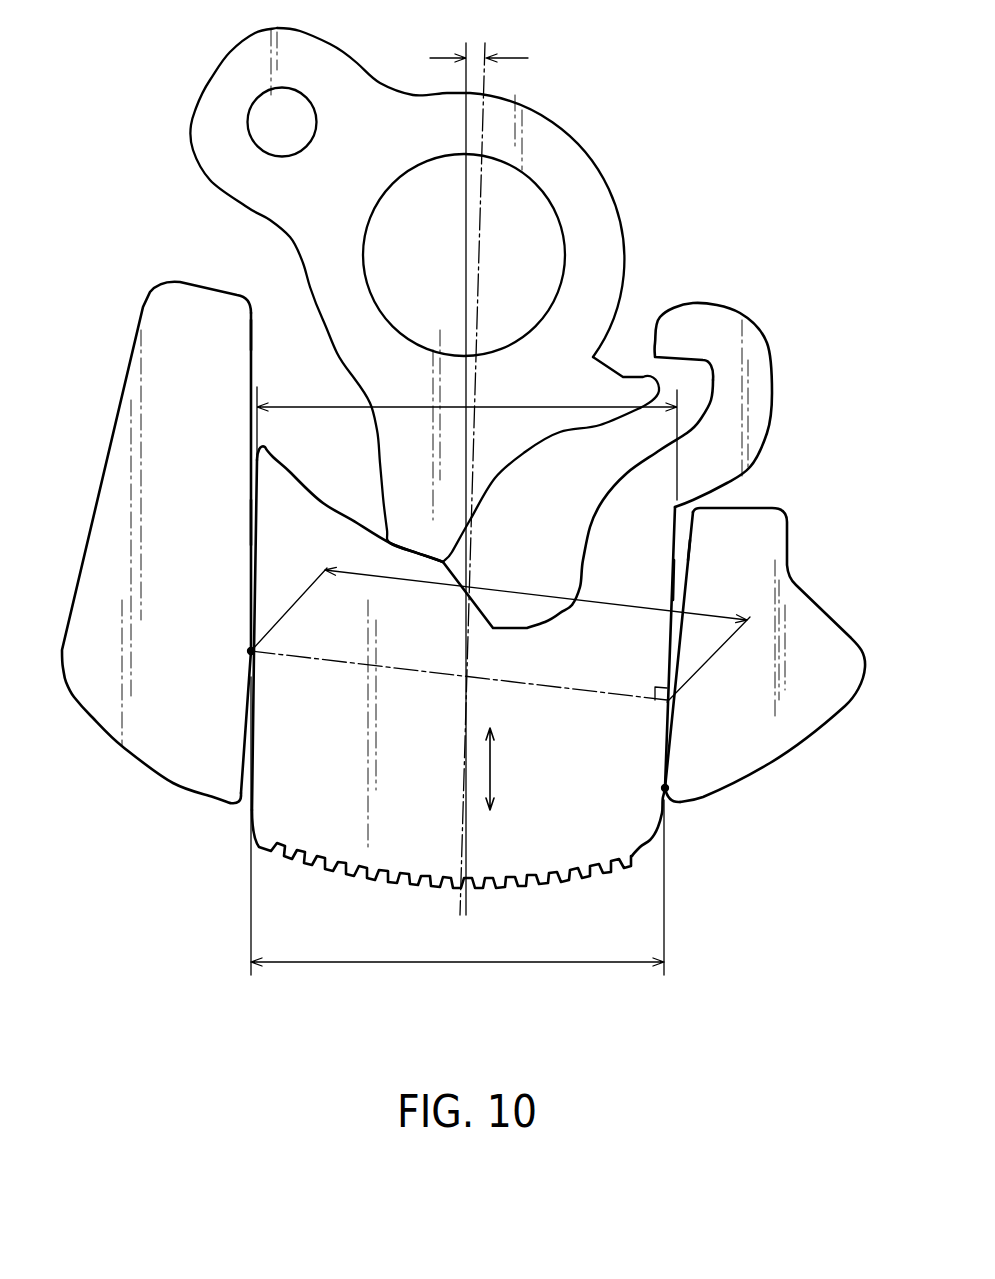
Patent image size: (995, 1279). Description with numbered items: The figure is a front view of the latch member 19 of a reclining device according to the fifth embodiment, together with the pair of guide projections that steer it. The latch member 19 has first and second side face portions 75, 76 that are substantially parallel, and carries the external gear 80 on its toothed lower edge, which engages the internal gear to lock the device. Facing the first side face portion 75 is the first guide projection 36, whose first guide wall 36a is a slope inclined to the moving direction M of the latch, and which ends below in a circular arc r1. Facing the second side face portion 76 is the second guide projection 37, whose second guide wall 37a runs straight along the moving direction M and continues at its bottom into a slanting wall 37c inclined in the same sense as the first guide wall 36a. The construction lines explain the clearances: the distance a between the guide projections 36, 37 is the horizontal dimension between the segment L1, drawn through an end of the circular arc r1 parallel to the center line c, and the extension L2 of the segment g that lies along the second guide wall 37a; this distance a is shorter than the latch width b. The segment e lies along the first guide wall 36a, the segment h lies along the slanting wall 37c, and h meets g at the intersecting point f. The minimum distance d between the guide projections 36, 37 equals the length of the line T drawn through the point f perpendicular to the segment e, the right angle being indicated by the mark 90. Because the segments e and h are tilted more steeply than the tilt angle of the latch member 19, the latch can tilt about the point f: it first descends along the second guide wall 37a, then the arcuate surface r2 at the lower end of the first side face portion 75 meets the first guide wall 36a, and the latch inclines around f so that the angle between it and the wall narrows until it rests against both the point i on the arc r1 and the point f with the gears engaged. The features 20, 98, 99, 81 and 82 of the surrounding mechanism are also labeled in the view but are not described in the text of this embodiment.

The lock lever 20 is at (612, 222).
The engaging projection of lever 98 is at (648, 378).
The tip of lever 99 is at (410, 553).
The latch member 19 is at (348, 830).
The external gear 80 is at (404, 876).
The hook portion 81 is at (695, 305).
The cam surface 82 is at (368, 518).
The first side face portion 75 is at (672, 630).
The second side face portion 76 is at (252, 524).
The second guide projection 37 is at (150, 763).
The second guide wall 37a is at (252, 367).
The slanting wall 37c is at (233, 806).
The first guide projection 36 is at (783, 757).
The first guide wall 36a is at (686, 604).
The circular arc r1 is at (676, 805).
The arcuate surface r2 is at (653, 842).
The segment L1 is at (670, 900).
The extension of segment g L2 is at (251, 900).
The line T is at (547, 690).
The moving direction M is at (502, 769).
The distance a is at (454, 959).
The latch width b is at (486, 397).
The center line c is at (459, 32).
The minimum distance d is at (523, 592).
The segment e is at (692, 548).
The intersecting point f is at (251, 651).
The segment g is at (252, 333).
The segment h is at (240, 758).
The point i is at (668, 784).
The right angle mark 90 is at (655, 688).